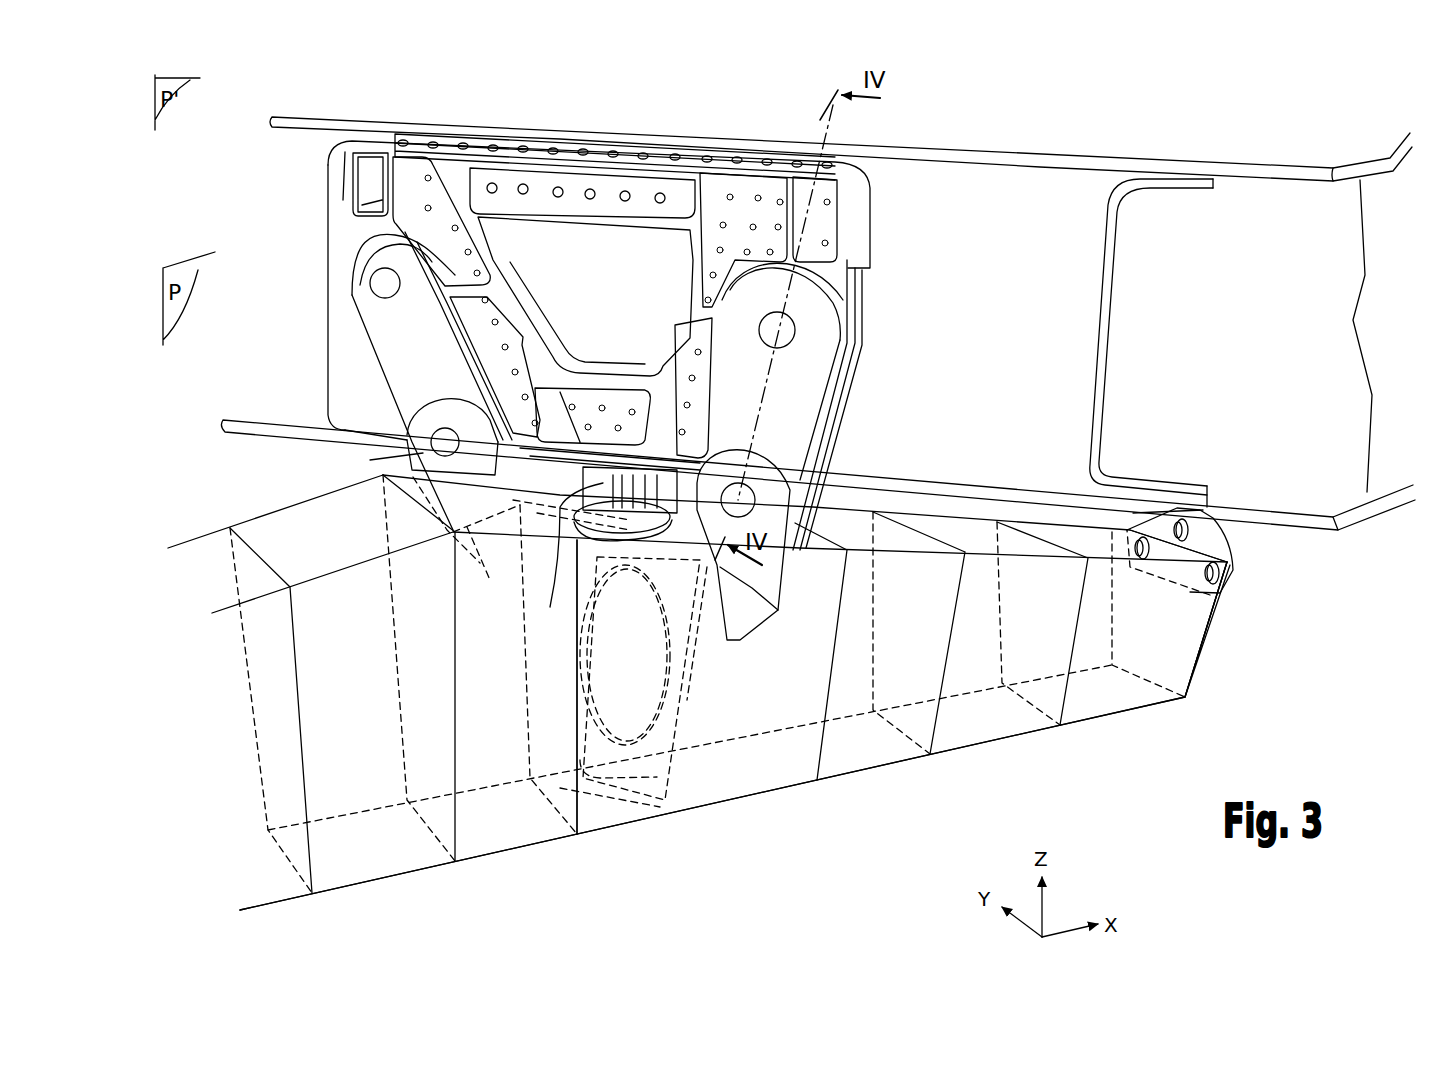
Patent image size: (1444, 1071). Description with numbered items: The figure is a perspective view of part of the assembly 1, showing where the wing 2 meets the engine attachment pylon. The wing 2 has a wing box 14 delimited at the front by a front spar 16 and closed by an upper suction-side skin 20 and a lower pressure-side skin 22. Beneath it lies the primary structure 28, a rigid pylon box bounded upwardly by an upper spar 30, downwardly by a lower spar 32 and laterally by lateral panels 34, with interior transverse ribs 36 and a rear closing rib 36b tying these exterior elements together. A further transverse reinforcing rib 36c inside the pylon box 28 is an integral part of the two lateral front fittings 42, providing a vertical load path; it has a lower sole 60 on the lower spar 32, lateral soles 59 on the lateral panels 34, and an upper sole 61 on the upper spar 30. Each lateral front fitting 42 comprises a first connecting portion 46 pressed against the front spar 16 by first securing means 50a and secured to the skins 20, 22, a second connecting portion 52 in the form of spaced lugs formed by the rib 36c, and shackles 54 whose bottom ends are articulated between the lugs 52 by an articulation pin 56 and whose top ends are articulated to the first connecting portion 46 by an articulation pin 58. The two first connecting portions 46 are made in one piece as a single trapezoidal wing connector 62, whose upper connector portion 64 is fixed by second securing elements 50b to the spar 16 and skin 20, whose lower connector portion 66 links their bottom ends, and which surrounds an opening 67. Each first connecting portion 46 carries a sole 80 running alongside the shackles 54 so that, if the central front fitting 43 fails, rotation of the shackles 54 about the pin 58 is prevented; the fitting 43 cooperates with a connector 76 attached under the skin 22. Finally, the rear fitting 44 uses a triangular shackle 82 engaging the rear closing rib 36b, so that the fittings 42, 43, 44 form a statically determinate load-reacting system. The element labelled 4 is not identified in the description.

The assembly 1 is at (740, 70).
The wing 2 is at (1342, 148).
The wing box 4 is at (1127, 717).
The wing box 14 is at (1330, 262).
The front spar 16 is at (1050, 340).
The upper suction-side skin 20 is at (355, 100).
The lower pressure-side skin 22 is at (290, 410).
The primary structure 28 is at (832, 790).
The upper spar 30 is at (285, 510).
The lower spar 32 is at (987, 747).
The lateral panels 34 is at (980, 677).
The interior transverse ribs 36 is at (455, 817).
The rear closing rib 36b is at (1207, 640).
The transverse reinforcing rib 36c is at (697, 767).
The lateral front fittings 42 is at (345, 300).
The central front fitting 43 is at (597, 483).
The rear fitting 44 is at (1247, 540).
The first connecting portion 46 is at (393, 220).
The first securing means 50a is at (433, 144).
The second securing elements 50b is at (525, 150).
The second connecting portion 52 is at (405, 455).
The shackle 54 is at (388, 325).
The articulation pin 56 is at (442, 435).
The articulation pin 58 is at (380, 283).
The lateral soles 59 is at (530, 660).
The lower sole 60 is at (610, 770).
The upper sole 61 is at (523, 570).
The single wing connector 62 is at (590, 157).
The upper connector portion 64 is at (545, 165).
The lower connector portion 66 is at (617, 403).
The opening 67 is at (585, 290).
The connector 76 is at (668, 530).
The sole 80 is at (388, 237).
The triangular shackle 82 is at (1217, 543).